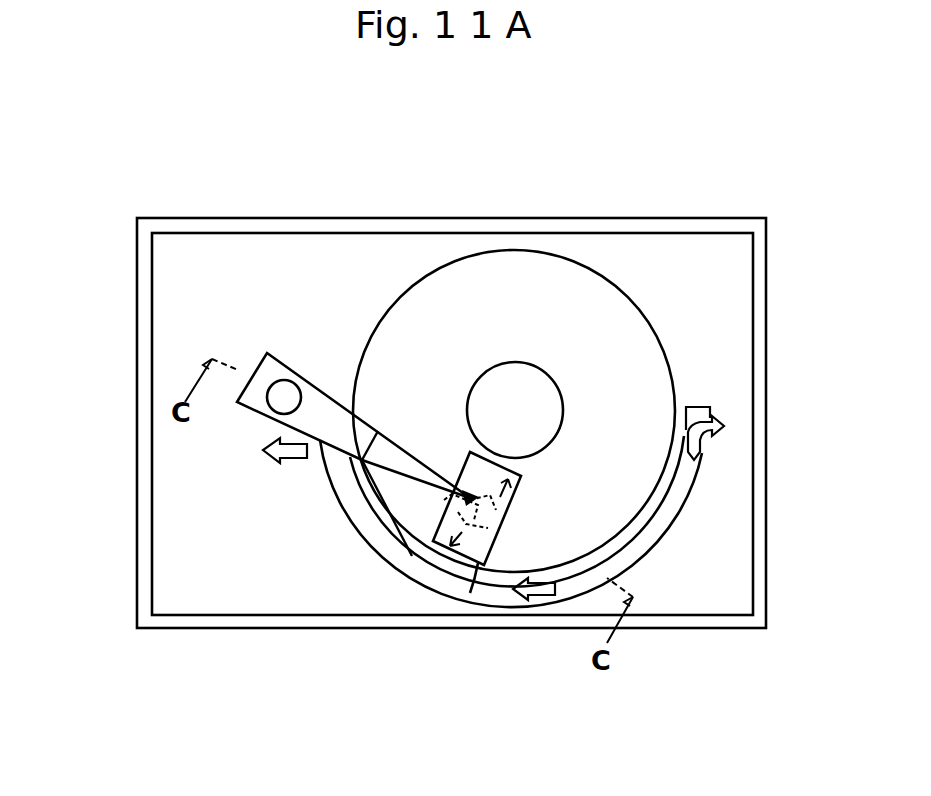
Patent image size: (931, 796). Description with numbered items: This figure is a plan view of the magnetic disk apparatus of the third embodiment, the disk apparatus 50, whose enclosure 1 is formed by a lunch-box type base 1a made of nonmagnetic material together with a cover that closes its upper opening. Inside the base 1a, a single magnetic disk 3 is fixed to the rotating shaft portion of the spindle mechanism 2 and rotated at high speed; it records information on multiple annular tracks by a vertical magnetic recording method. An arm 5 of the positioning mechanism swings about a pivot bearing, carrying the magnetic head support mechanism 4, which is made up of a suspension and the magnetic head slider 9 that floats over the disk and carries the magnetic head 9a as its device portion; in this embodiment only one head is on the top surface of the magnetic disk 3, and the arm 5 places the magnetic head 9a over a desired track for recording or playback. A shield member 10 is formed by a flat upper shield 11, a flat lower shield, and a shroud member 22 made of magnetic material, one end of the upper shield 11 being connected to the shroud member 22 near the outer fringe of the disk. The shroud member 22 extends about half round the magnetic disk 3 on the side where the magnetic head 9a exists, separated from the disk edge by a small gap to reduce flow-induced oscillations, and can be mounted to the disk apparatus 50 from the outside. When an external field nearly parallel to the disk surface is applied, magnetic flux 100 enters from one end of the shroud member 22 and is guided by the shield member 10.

The enclosure 1 is at (786, 588).
The base 1a is at (700, 630).
The spindle mechanism 2 is at (517, 402).
The magnetic disk 3 is at (640, 330).
The magnetic head support mechanism 4 is at (394, 440).
The arm 5 is at (298, 370).
The magnetic head slider 9 is at (462, 488).
The magnetic head 9a is at (450, 537).
The shield member 10 is at (513, 505).
The upper shield 11 is at (475, 553).
The shroud member 22 is at (412, 556).
The disk apparatus 50 is at (732, 198).
The magnetic flux 100 is at (288, 462).